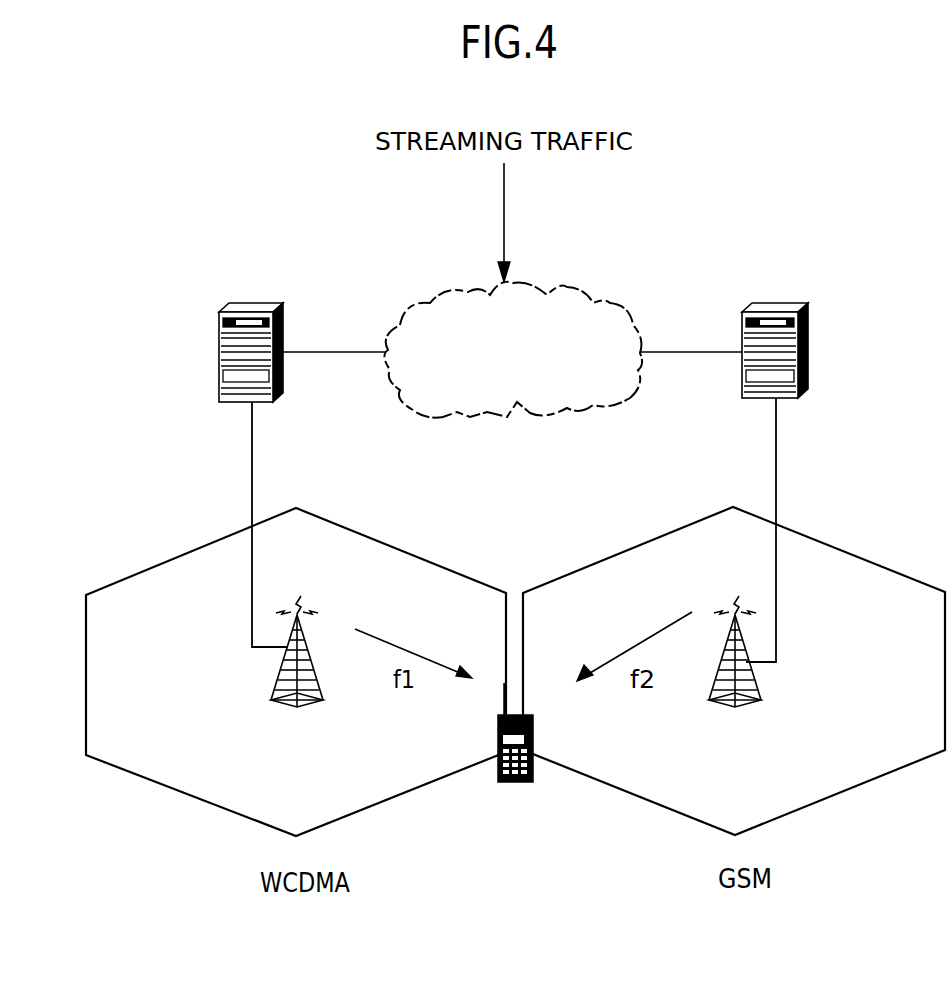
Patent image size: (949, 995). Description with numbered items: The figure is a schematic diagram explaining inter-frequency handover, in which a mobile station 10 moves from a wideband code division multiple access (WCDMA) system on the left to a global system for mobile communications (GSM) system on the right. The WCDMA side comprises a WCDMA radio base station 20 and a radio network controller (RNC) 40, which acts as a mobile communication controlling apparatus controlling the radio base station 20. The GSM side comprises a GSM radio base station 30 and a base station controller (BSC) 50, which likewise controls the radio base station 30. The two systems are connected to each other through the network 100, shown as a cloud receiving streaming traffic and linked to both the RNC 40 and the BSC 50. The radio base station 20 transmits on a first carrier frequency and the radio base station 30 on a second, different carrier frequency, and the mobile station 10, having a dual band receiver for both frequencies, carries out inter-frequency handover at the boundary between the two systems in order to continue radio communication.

The mobile station 10 is at (497, 775).
The WCDMA radio base station 20 is at (283, 705).
The GSM radio base station 30 is at (728, 703).
The radio network controller 40 is at (219, 340).
The base station controller 50 is at (808, 340).
The network 100 is at (578, 290).